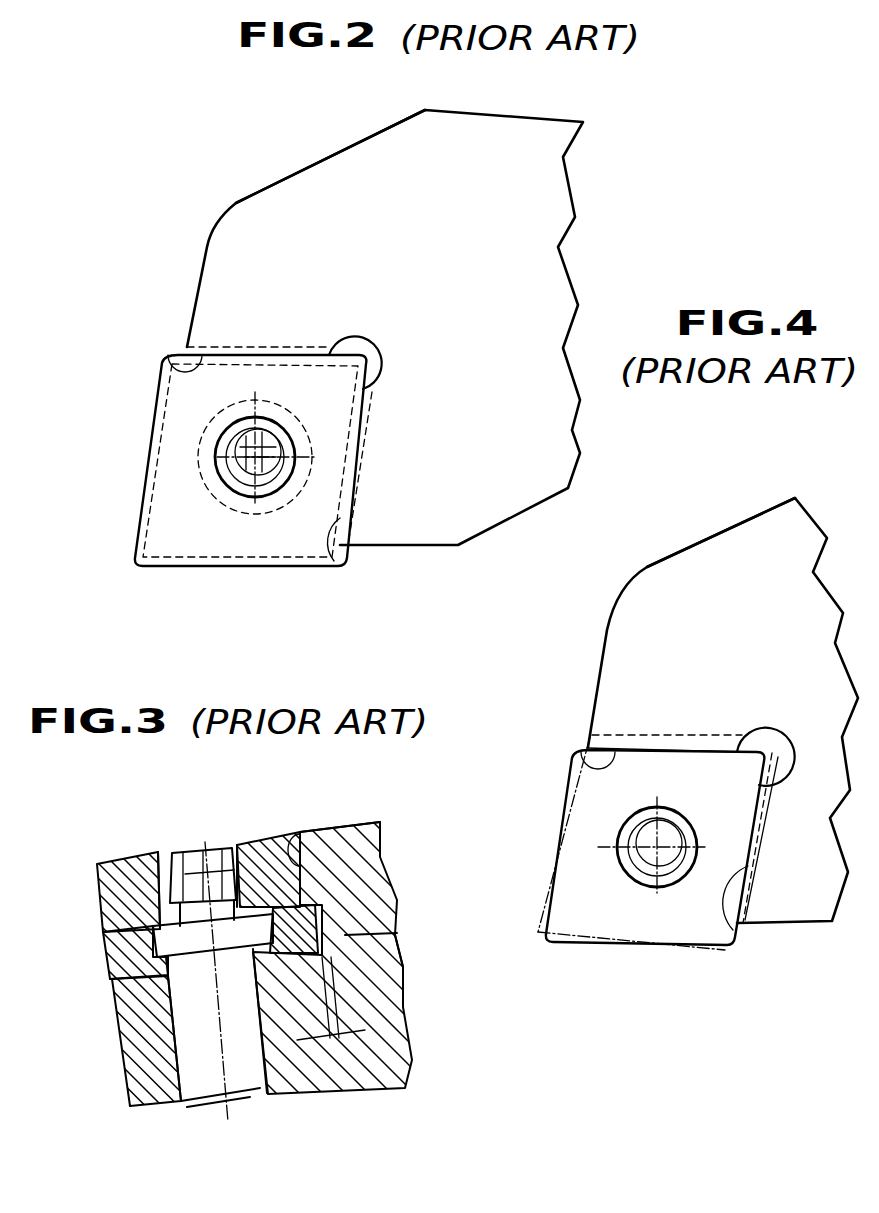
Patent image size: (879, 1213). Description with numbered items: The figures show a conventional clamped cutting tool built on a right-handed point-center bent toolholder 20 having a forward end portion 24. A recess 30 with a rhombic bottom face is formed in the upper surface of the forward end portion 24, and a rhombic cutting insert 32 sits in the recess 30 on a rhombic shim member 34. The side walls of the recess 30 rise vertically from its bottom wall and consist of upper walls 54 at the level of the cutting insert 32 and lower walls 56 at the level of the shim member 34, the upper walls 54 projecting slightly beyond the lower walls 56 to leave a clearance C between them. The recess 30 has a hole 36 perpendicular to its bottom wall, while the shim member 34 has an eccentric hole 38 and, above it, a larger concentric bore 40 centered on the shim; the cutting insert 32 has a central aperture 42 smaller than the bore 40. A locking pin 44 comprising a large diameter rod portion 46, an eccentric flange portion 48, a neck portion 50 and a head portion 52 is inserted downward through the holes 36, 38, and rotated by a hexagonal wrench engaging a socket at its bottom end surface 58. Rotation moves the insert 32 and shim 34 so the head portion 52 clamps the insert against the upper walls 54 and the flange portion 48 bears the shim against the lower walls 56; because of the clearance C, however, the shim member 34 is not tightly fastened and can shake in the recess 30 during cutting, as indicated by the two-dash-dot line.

In FIG. 2, the point-center bent toolholder 20 is at (489, 108).
In FIG. 4, the point-center bent toolholder 20 is at (750, 517).
In FIG. 3, the point-center bent toolholder 20 is at (397, 1098).
In FIG. 2, the forward end portion 24 is at (333, 173).
In FIG. 4, the forward end portion 24 is at (690, 558).
In FIG. 3, the forward end portion 24 is at (360, 837).
In FIG. 2, the recess 30 is at (380, 370).
In FIG. 4, the recess 30 is at (766, 757).
In FIG. 3, the recess 30 is at (112, 972).
In FIG. 2, the cutting insert 32 is at (192, 546).
In FIG. 4, the cutting insert 32 is at (565, 945).
In FIG. 3, the cutting insert 32 is at (99, 864).
In FIG. 2, the shim member 34 is at (272, 545).
In FIG. 4, the shim member 34 is at (535, 915).
In FIG. 3, the shim member 34 is at (118, 948).
In FIG. 3, the hole 36 is at (158, 1102).
In FIG. 3, the hole 38 is at (168, 978).
In FIG. 2, the bore 40 is at (242, 510).
In FIG. 3, the bore 40 is at (187, 958).
In FIG. 2, the aperture 42 is at (222, 473).
In FIG. 4, the aperture 42 is at (623, 863).
In FIG. 3, the aperture 42 is at (159, 857).
In FIG. 3, the locking pin 44 is at (238, 1128).
In FIG. 3, the large diameter rod portion 46 is at (262, 1052).
In FIG. 2, the flange portion 48 is at (197, 462).
In FIG. 3, the flange portion 48 is at (240, 940).
In FIG. 3, the neck portion 50 is at (217, 847).
In FIG. 2, the head portion 52 is at (282, 430).
In FIG. 4, the head portion 52 is at (665, 863).
In FIG. 3, the head portion 52 is at (187, 877).
In FIG. 2, the upper walls 54 is at (168, 356).
In FIG. 4, the upper walls 54 is at (581, 753).
In FIG. 3, the upper walls 54 is at (293, 840).
In FIG. 2, the lower walls 56 is at (267, 360).
In FIG. 4, the lower walls 56 is at (693, 742).
In FIG. 3, the lower walls 56 is at (395, 930).
In FIG. 3, the bottom end surface 58 is at (240, 1103).
In FIG. 3, the clearance C is at (331, 998).